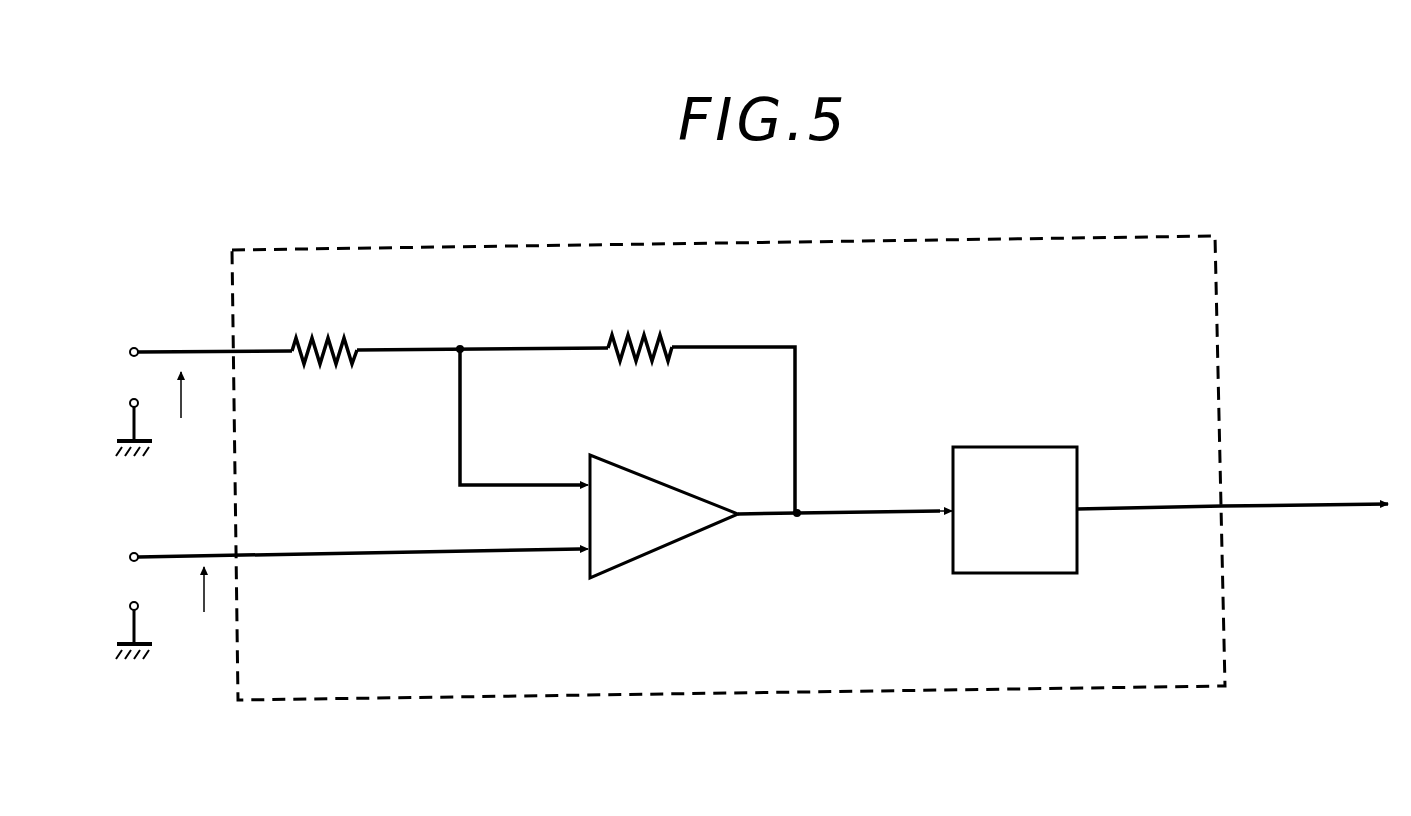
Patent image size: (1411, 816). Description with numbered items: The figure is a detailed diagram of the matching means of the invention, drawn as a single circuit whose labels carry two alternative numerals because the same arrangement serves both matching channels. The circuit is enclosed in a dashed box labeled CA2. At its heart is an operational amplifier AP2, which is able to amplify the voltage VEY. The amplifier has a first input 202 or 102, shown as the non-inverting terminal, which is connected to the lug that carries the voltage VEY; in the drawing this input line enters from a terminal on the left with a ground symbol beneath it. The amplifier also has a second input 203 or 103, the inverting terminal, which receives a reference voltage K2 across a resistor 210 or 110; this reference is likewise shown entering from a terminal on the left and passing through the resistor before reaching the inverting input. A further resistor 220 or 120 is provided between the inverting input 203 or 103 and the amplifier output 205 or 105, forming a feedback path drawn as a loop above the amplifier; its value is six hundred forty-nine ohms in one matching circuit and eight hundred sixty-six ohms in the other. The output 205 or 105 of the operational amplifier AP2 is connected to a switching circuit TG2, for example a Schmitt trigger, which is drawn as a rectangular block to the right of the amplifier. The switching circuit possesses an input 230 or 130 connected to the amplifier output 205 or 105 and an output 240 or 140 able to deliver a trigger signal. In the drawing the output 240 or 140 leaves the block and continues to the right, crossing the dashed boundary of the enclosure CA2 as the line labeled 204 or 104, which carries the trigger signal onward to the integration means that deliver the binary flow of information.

The resistor 210 is at (321, 330).
The resistor 110 is at (330, 325).
The resistor 220 is at (637, 323).
The resistor 120 is at (642, 316).
The second input 203 is at (524, 417).
The second input 103 is at (586, 482).
The first input 202 is at (363, 576).
The first input 102 is at (588, 553).
The output 205 is at (774, 537).
The output 105 is at (740, 516).
The input 230 is at (874, 492).
The input 130 is at (950, 506).
The output 240 is at (1149, 485).
The output 140 is at (1085, 505).
The output terminal 204 is at (1305, 482).
The output terminal 104 is at (1225, 498).
The operational amplifier AP2 is at (664, 516).
The switching circuit TG2 is at (1015, 510).
The control amplifier unit CA2 is at (738, 683).
The reference voltage K2 is at (195, 402).
The voltage VEY is at (144, 606).